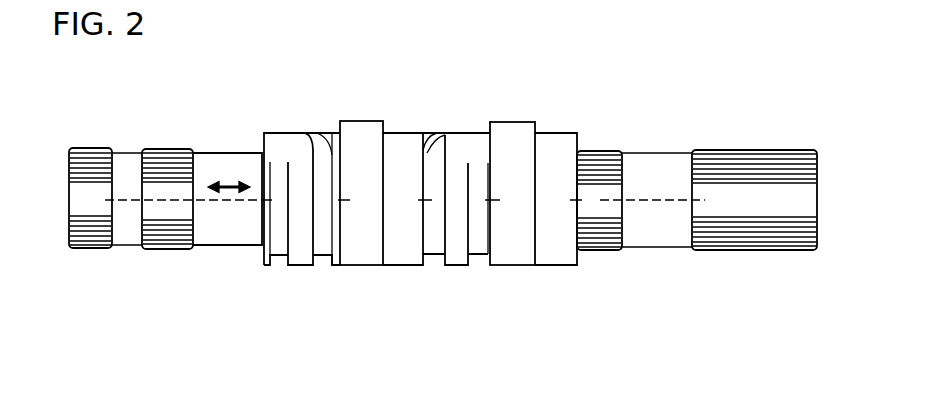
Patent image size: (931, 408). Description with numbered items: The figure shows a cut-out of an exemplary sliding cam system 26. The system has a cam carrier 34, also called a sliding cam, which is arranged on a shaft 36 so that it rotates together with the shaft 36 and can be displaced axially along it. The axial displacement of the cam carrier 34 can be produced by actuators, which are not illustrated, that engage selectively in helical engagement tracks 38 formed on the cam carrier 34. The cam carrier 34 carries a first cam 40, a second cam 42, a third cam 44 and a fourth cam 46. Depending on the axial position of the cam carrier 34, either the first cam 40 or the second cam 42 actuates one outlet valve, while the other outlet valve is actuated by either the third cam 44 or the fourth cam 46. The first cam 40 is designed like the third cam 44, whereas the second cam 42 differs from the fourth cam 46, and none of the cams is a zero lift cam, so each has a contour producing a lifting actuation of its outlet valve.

The sliding cam system 26 is at (432, 53).
The cam carrier 34 is at (270, 143).
The shaft 36 is at (132, 162).
The helical engagement tracks 38 is at (285, 258).
The first cam 40 is at (365, 130).
The second cam 42 is at (395, 247).
The third cam 44 is at (507, 140).
The fourth cam 46 is at (557, 262).